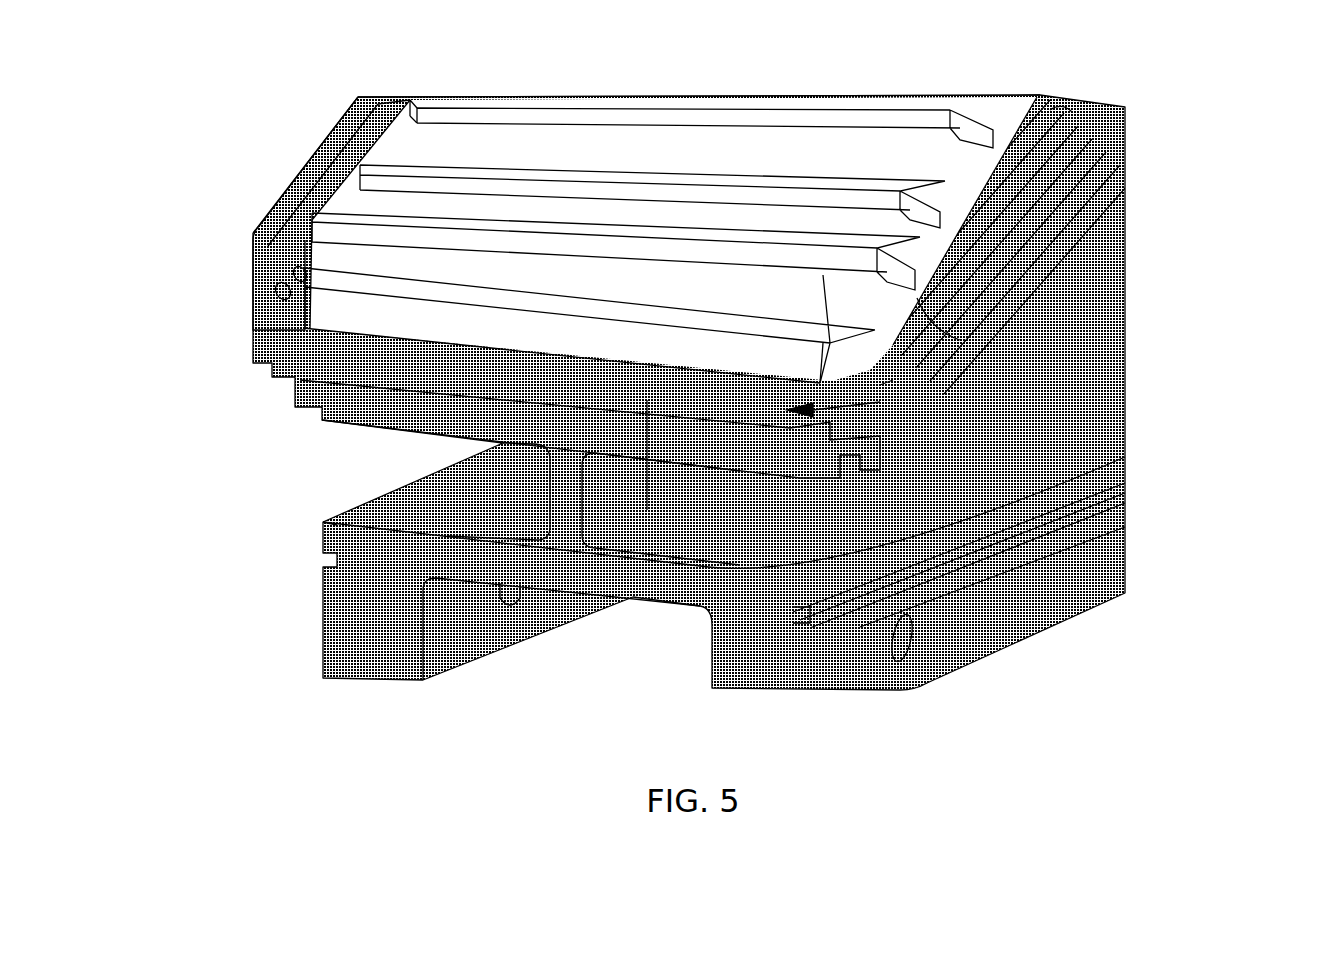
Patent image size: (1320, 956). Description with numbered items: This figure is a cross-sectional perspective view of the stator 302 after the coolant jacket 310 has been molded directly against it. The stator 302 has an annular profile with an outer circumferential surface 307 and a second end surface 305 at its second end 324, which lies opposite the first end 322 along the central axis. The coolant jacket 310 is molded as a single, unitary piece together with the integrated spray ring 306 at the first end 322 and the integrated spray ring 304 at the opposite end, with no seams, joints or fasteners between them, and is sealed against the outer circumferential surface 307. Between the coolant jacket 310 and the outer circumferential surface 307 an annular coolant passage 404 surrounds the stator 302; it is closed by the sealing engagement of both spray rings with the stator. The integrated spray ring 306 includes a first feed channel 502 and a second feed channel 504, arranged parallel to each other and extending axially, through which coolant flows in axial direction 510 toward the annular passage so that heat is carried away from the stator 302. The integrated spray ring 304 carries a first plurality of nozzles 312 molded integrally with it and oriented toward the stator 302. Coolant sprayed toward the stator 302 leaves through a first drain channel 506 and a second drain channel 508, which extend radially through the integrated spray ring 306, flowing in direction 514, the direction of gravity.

The stator 302 is at (893, 232).
The integrated spray ring 304 is at (270, 258).
The second end surface 305 is at (827, 368).
The integrated spray ring 306 is at (1073, 107).
The outer circumferential surface 307 is at (437, 347).
The coolant jacket 310 is at (348, 532).
The first plurality of nozzles 312 is at (262, 295).
The first end 322 is at (1243, 399).
The second end 324 is at (143, 229).
The annular coolant passage 404 is at (647, 510).
The first feed channel 502 is at (880, 385).
The second feed channel 504 is at (900, 413).
The first drain channel 506 is at (917, 298).
The second drain channel 508 is at (1043, 173).
The axial direction 510 is at (824, 470).
The direction 514 is at (1022, 168).